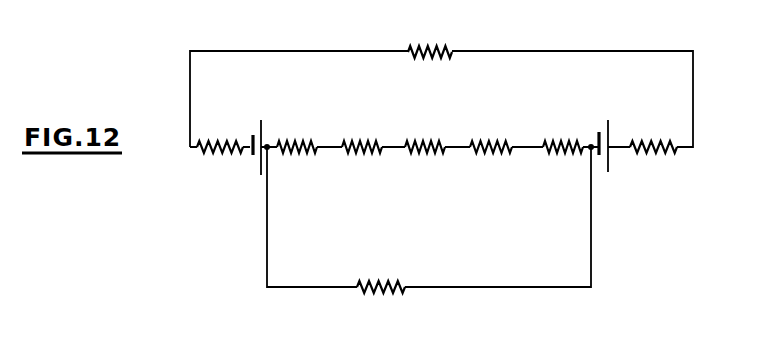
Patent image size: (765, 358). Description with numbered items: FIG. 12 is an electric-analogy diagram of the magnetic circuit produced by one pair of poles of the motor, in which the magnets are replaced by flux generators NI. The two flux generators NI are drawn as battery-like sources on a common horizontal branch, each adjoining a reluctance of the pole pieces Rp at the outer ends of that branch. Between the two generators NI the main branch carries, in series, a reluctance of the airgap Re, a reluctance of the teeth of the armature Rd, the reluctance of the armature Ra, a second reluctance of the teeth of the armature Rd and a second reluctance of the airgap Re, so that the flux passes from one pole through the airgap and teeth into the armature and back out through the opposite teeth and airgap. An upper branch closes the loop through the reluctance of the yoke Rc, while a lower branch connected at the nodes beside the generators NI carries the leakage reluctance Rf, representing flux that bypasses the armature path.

The reluctance of the pole pieces Rp is at (437, 166).
The reluctance of the airgap Re is at (430, 165).
The reluctance of the teeth of the armature Rd is at (427, 165).
The reluctance of the armature Ra is at (425, 165).
The reluctance of the yoke Rc is at (430, 37).
The leakage reluctance Rf is at (381, 306).
The flux generators NI is at (433, 134).